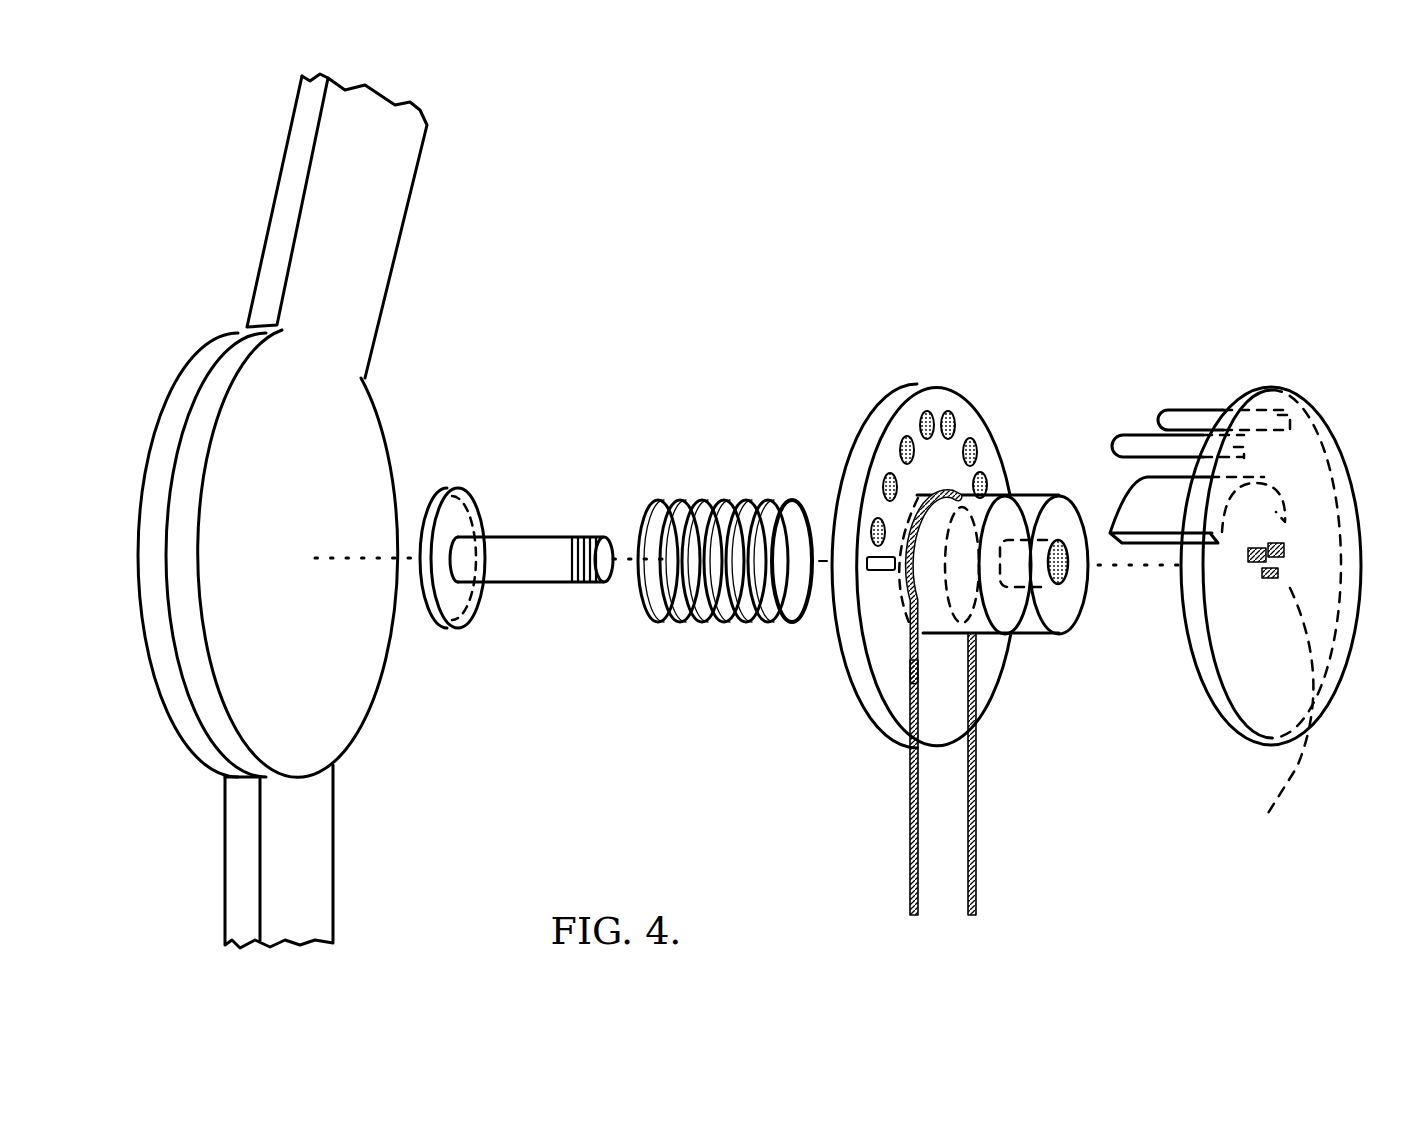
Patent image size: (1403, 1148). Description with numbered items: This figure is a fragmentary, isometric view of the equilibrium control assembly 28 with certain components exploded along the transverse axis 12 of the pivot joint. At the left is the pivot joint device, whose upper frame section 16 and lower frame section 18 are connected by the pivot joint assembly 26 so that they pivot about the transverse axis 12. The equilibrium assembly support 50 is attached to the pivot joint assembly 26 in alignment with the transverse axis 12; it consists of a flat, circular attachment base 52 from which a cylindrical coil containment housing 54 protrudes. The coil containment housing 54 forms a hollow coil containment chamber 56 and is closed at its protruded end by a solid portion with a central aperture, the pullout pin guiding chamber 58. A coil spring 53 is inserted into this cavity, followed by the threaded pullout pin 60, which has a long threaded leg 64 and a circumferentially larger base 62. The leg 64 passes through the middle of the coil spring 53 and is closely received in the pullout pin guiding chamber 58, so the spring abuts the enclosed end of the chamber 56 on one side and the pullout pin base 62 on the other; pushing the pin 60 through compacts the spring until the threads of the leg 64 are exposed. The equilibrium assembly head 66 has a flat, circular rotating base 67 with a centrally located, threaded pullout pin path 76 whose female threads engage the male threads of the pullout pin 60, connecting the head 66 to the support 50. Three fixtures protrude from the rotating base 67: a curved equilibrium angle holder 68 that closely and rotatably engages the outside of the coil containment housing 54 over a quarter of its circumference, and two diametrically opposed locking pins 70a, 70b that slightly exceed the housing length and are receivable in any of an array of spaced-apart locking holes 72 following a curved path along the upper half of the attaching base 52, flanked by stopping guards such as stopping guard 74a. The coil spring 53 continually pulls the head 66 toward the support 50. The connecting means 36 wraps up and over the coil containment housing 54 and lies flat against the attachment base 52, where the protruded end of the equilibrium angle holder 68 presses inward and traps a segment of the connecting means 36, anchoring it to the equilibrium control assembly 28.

The transverse axis 12 is at (386, 555).
The upper frame section 16 is at (380, 203).
The lower frame section 18 is at (305, 868).
The pivot joint assembly 26 is at (272, 724).
The equilibrium control assembly 28 is at (1263, 178).
The connecting means 36 is at (985, 848).
The equilibrium assembly support 50 is at (833, 717).
The attachment base 52 is at (878, 432).
The coil spring 53 is at (717, 622).
The coil containment housing 54 is at (1015, 513).
The coil containment chamber 56 is at (987, 637).
The pullout pin guiding chamber 58 is at (1067, 568).
The threaded pullout pin 60 is at (530, 640).
The pullout pin base 62 is at (460, 510).
The pullout pin leg 64 is at (548, 547).
The equilibrium assembly head 66 is at (1187, 727).
The rotating base 67 is at (1287, 398).
The equilibrium angle holder 68 is at (1132, 498).
The locking pin 70a is at (1135, 442).
The locking pin 70b is at (1182, 418).
The locking holes 72 is at (937, 303).
The stopping guard 74a is at (882, 572).
The pullout pin path 76 is at (1267, 693).